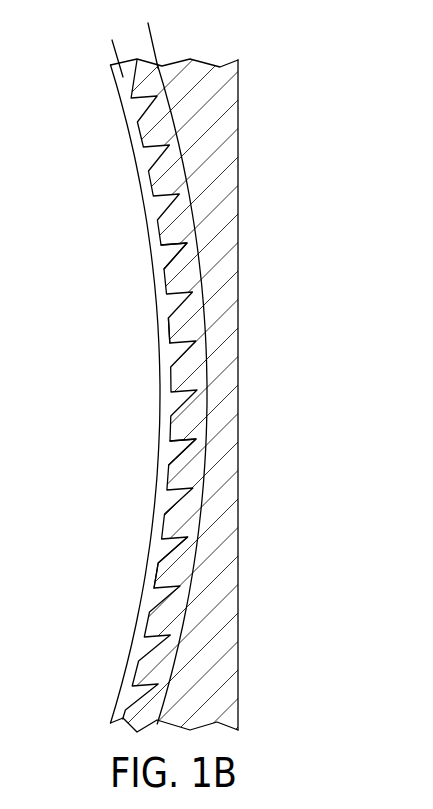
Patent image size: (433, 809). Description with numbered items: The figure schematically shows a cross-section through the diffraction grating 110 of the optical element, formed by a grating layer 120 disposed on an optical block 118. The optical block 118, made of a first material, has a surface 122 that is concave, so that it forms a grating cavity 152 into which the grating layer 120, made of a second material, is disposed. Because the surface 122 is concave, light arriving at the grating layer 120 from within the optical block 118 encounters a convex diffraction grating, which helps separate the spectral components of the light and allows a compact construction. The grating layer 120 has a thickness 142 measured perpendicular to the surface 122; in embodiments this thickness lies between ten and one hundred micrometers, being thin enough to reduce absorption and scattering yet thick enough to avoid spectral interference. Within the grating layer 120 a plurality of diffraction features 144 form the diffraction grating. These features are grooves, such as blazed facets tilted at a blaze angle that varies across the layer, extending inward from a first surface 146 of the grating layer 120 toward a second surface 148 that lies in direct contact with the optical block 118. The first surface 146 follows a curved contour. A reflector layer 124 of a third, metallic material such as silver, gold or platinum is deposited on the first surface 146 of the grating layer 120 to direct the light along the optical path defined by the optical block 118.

The diffraction grating 110 is at (243, 385).
The optical block 118 is at (238, 395).
The grating layer 120 is at (148, 667).
The surface 122 is at (200, 523).
The reflector layer 124 is at (138, 160).
The thickness 142 is at (170, 23).
The diffraction features 144 is at (122, 237).
The first surface 146 is at (161, 328).
The second surface 148 is at (187, 575).
The grating cavity 152 is at (128, 469).